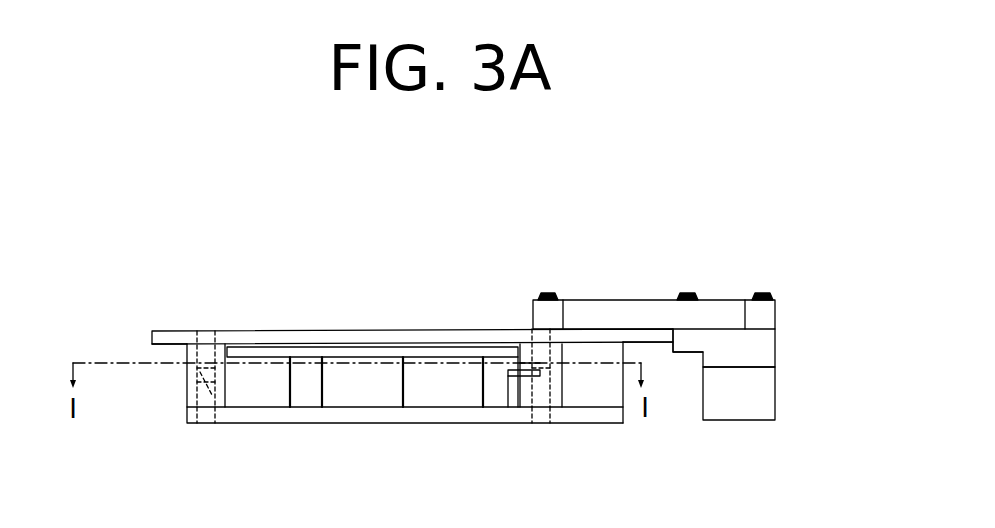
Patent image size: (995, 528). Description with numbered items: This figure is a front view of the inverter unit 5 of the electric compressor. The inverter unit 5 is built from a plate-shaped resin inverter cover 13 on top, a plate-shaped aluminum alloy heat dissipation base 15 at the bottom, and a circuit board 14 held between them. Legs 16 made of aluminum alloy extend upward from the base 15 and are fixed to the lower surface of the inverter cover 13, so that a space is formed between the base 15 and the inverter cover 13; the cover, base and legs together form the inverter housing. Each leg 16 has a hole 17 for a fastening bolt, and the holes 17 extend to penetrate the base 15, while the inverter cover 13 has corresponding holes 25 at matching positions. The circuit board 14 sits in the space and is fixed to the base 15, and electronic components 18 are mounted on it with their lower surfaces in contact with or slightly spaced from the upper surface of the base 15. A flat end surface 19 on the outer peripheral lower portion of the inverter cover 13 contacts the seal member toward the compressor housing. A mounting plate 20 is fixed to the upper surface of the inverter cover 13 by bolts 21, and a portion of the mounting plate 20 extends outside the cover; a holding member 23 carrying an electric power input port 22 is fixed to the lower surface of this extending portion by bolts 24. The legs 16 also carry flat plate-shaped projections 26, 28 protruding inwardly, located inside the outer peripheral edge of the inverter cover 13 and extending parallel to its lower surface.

The inverter unit 5 is at (293, 284).
The inverter cover 13 is at (340, 330).
The circuit board 14 is at (383, 352).
The heat dissipation base 15 is at (440, 423).
The legs 16 is at (227, 390).
The hole 17 is at (193, 426).
The electronic components 18 is at (403, 383).
The flat end surface 19 is at (162, 356).
The mounting plate 20 is at (620, 300).
The bolts 21 is at (548, 292).
The electric power input port 22 is at (777, 393).
The holding member 23 is at (765, 345).
The bolts 24 is at (687, 292).
The holes 25 is at (203, 331).
The projection 26 is at (185, 380).
The projection 28 is at (508, 380).